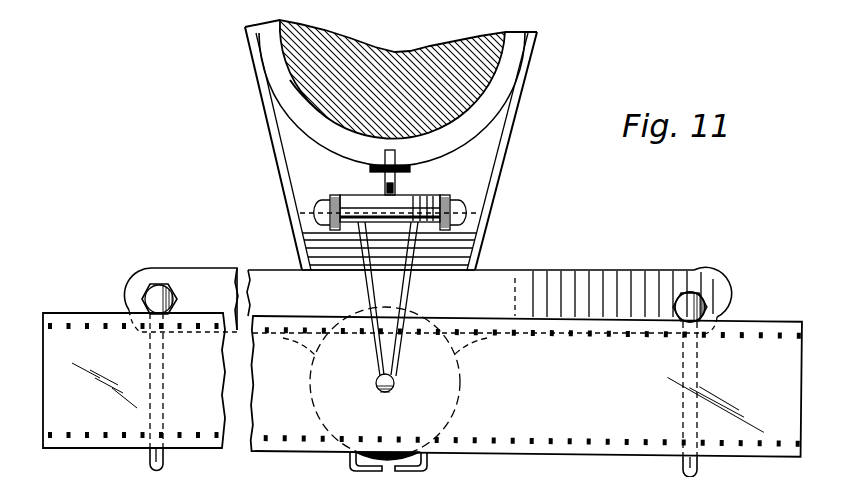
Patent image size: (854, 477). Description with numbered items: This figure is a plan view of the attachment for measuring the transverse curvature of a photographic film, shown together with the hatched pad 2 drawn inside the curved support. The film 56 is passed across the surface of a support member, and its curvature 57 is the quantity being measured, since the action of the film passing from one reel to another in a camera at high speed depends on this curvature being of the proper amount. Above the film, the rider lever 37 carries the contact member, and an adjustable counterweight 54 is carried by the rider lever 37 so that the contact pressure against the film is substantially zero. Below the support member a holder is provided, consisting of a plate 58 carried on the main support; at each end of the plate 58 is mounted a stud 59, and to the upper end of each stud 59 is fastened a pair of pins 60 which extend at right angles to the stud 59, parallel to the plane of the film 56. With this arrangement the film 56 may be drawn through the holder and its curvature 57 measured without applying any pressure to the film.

The pad 2 is at (490, 34).
The rider lever 37 is at (356, 254).
The adjustable counterweight 54 is at (397, 183).
The film 56 is at (596, 343).
The curvature 57 is at (412, 365).
The plate 58 is at (205, 277).
The stud 59 is at (150, 292).
The pins 60 is at (152, 468).